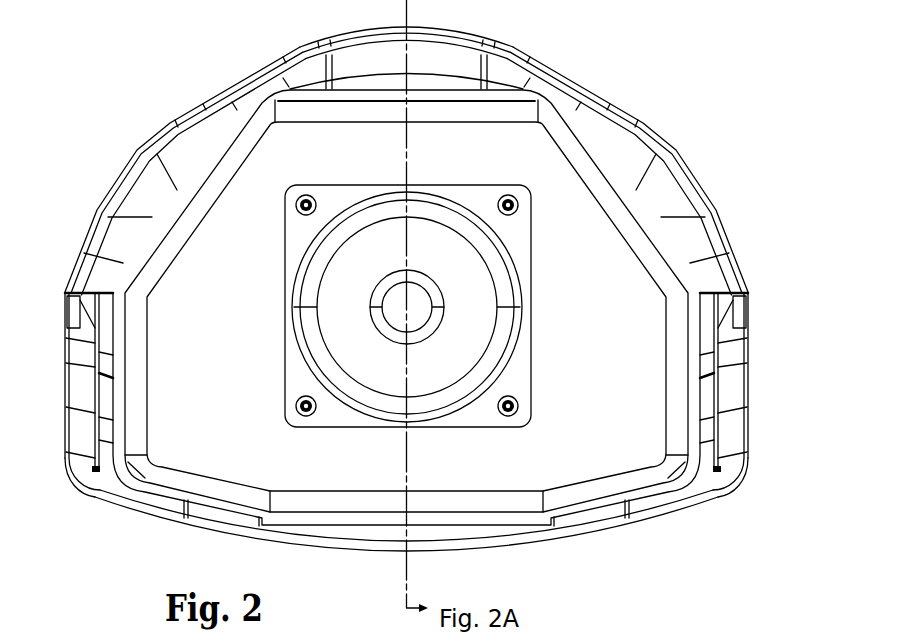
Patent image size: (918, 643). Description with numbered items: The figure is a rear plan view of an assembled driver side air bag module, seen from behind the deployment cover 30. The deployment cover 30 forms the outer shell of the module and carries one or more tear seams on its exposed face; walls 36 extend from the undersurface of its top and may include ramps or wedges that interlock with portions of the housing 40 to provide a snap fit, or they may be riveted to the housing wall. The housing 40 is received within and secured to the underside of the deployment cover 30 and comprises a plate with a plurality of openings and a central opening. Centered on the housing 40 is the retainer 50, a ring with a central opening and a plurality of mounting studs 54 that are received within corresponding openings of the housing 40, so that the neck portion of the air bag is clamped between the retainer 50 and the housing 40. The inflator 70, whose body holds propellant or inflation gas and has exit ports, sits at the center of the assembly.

The deployment cover 30 is at (629, 116).
The walls 36 is at (177, 190).
The housing 40 is at (628, 207).
The retainer 50 is at (514, 246).
The mounting studs 54 is at (512, 200).
The inflator 70 is at (458, 336).